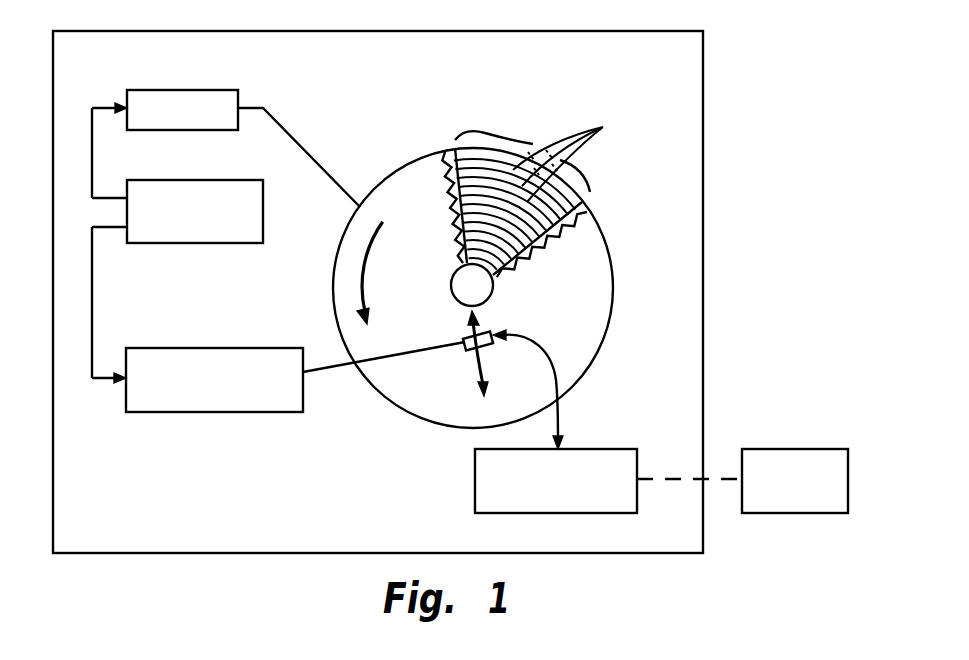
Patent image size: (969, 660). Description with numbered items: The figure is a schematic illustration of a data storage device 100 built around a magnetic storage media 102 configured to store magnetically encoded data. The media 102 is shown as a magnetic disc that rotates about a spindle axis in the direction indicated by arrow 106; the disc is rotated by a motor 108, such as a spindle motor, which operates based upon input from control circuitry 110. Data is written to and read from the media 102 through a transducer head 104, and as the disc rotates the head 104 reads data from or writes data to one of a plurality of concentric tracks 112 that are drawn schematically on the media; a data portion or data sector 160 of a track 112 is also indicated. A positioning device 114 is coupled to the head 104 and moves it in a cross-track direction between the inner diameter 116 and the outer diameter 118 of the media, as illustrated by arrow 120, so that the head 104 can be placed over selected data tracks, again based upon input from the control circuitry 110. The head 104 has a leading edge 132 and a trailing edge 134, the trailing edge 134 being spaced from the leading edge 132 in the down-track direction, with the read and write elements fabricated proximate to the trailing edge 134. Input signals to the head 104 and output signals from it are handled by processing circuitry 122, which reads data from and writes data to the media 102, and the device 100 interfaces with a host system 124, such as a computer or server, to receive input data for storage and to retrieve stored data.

The data storage device 100 is at (710, 204).
The magnetic storage media 102 is at (554, 314).
The transducer head 104 is at (468, 333).
The arrow 106 is at (370, 258).
The motor 108 is at (192, 90).
The control circuitry 110 is at (192, 180).
The concentric tracks 112 is at (542, 198).
The positioning device 114 is at (192, 348).
The inner diameter 116 is at (493, 292).
The outer diameter 118 is at (452, 428).
The arrow 120 is at (487, 361).
The processing circuitry 122 is at (593, 449).
The host system 124 is at (775, 449).
The leading edge 132 is at (465, 351).
The trailing edge 134 is at (533, 336).
The data sector 160 is at (535, 143).